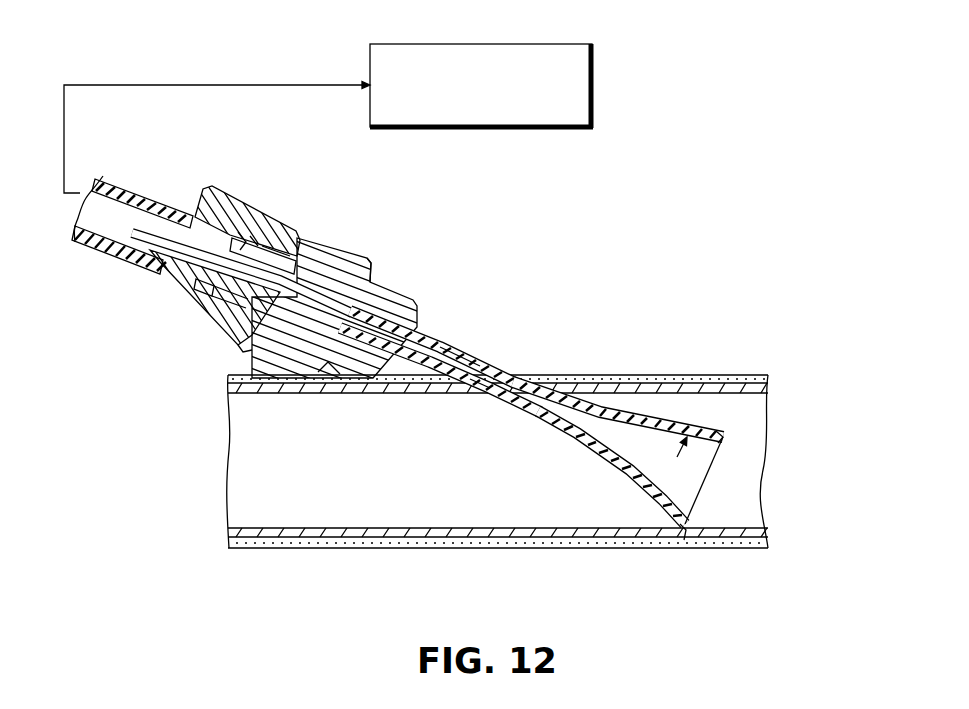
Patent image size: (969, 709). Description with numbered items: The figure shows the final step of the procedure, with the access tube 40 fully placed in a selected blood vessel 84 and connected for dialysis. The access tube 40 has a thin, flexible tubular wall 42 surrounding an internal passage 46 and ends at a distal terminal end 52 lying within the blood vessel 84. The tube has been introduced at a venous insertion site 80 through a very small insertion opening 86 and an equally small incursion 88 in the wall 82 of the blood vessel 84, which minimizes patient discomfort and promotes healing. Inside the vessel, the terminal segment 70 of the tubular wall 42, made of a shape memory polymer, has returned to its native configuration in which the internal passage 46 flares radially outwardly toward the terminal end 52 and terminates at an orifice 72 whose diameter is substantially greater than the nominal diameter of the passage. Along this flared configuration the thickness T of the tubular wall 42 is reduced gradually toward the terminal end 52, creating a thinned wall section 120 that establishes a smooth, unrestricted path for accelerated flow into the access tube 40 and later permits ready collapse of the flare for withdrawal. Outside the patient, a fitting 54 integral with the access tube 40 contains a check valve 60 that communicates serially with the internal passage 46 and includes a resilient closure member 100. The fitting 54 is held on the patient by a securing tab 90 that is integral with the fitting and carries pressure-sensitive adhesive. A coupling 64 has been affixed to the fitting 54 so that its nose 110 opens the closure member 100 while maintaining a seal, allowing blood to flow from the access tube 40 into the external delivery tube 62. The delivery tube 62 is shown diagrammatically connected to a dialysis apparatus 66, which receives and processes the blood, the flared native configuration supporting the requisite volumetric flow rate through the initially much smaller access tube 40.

The access tube 40 is at (440, 338).
The tubular wall 42 is at (422, 338).
The internal passage 46 is at (483, 381).
The distal terminal end 52 is at (685, 533).
The fitting 54 is at (382, 268).
The check valve 60 is at (240, 222).
The external delivery tube 62 is at (143, 200).
The coupling 64 is at (160, 310).
The dialysis apparatus 66 is at (550, 130).
The terminal segment 70 is at (572, 434).
The orifice 72 is at (712, 472).
The venous insertion site 80 is at (527, 362).
The wall of blood vessel 82 is at (277, 391).
The blood vessel 84 is at (243, 547).
The insertion opening 86 is at (472, 366).
The incursion 88 is at (520, 395).
The securing tab 90 is at (233, 350).
The resilient closure member 100 is at (205, 284).
The nose 110 is at (313, 238).
The thinned wall section 120 is at (722, 414).
The thickness T is at (694, 425).